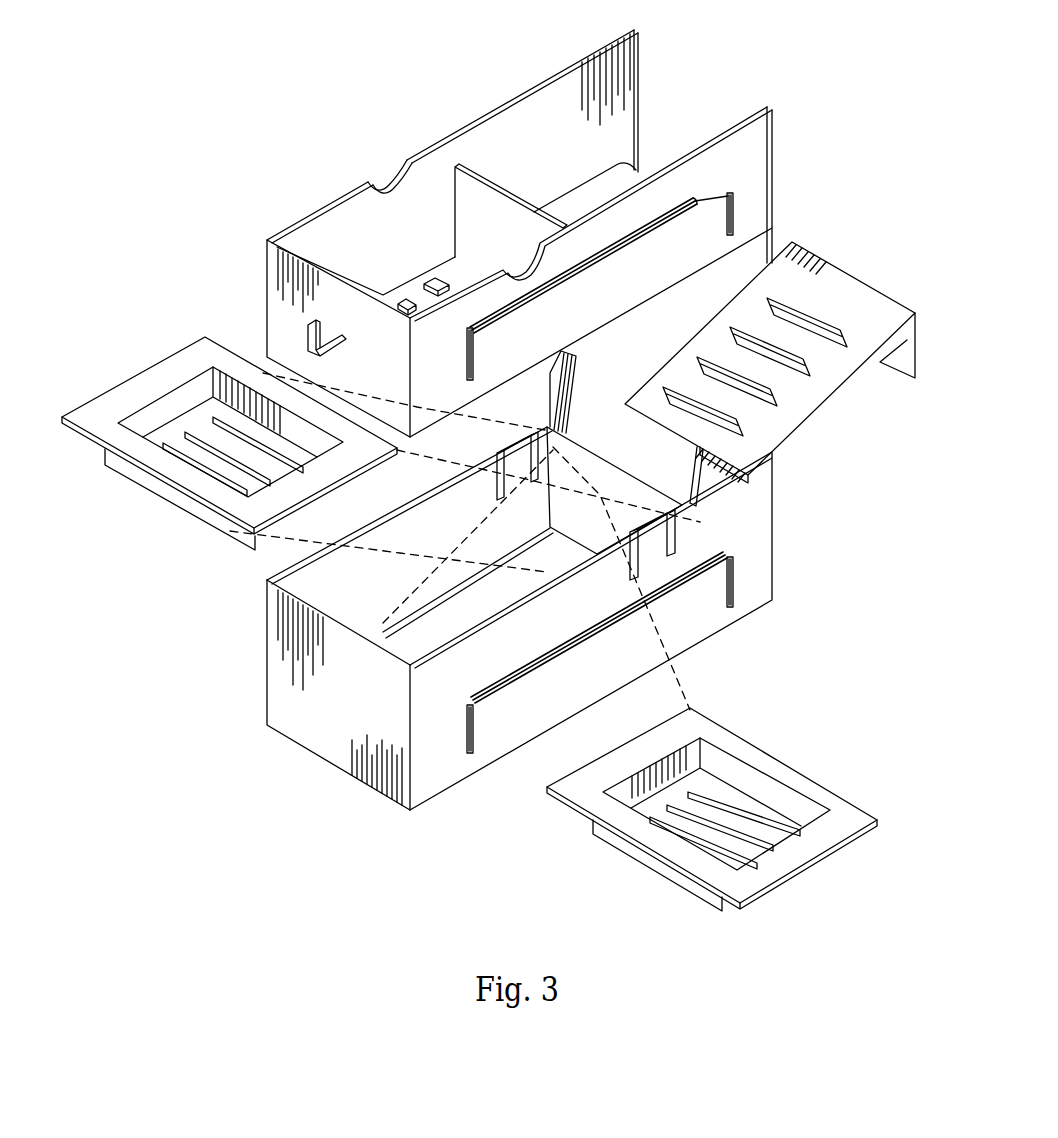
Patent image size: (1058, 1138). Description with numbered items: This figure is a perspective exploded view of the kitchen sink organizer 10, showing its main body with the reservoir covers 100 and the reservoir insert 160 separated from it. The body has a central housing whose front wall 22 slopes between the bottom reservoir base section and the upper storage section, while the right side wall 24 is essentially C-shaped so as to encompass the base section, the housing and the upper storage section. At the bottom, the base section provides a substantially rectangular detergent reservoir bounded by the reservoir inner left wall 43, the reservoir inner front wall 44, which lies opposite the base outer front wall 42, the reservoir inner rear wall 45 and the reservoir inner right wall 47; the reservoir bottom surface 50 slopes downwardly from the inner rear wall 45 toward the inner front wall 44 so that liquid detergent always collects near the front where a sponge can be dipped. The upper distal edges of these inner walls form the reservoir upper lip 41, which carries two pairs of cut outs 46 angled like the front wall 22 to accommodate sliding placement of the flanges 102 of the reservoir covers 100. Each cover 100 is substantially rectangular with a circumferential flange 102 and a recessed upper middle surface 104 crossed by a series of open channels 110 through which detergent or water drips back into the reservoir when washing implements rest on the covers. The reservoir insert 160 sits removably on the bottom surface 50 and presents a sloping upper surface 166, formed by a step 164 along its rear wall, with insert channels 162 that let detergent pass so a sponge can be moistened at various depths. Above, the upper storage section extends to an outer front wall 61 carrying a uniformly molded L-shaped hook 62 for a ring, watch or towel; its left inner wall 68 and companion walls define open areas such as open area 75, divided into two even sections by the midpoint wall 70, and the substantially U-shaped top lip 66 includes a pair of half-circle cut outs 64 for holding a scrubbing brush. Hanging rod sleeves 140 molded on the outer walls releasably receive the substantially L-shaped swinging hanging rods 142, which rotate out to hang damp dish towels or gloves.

The kitchen sink organizer 10 is at (300, 115).
The front wall 22 is at (620, 352).
The right side wall 24 is at (507, 652).
The reservoir upper lip 41 is at (313, 558).
The base outer front wall 42 is at (363, 705).
The reservoir inner left wall 43 is at (418, 539).
The reservoir inner front wall 44 is at (308, 560).
The reservoir inner rear wall 45 is at (588, 532).
The cut outs 46 is at (537, 452).
The reservoir inner right wall 47 is at (326, 604).
The reservoir bottom surface 50 is at (543, 566).
The outer front wall 61 is at (362, 352).
The L-shaped hook 62 is at (305, 348).
The half-circle cut outs 64 is at (390, 152).
The top lip 66 is at (517, 97).
The left inner wall 68 is at (527, 162).
The midpoint wall 70 is at (477, 247).
The open area 75 is at (328, 240).
The reservoir covers 100 is at (137, 352).
The cover flange 102 is at (605, 808).
The recessed upper middle surface 104 is at (717, 790).
The open channels 110 is at (268, 470).
The hanging rod sleeves 140 is at (740, 585).
The swinging hanging rods 142 is at (665, 605).
The reservoir insert 160 is at (831, 227).
The insert channels 162 is at (797, 370).
The step 164 is at (913, 378).
The upper surface 166 is at (770, 432).